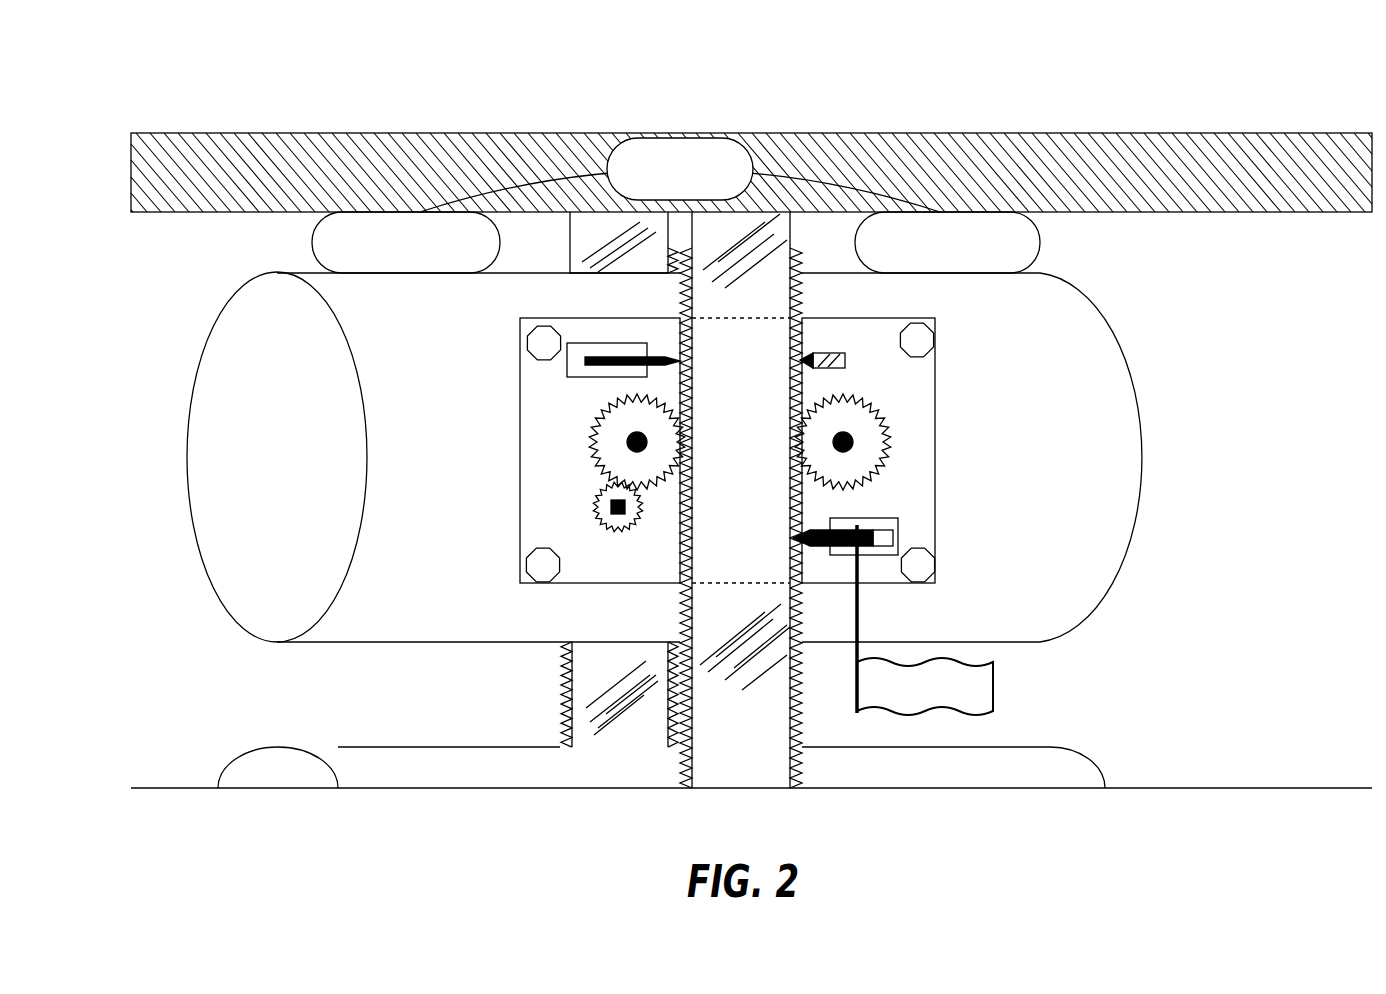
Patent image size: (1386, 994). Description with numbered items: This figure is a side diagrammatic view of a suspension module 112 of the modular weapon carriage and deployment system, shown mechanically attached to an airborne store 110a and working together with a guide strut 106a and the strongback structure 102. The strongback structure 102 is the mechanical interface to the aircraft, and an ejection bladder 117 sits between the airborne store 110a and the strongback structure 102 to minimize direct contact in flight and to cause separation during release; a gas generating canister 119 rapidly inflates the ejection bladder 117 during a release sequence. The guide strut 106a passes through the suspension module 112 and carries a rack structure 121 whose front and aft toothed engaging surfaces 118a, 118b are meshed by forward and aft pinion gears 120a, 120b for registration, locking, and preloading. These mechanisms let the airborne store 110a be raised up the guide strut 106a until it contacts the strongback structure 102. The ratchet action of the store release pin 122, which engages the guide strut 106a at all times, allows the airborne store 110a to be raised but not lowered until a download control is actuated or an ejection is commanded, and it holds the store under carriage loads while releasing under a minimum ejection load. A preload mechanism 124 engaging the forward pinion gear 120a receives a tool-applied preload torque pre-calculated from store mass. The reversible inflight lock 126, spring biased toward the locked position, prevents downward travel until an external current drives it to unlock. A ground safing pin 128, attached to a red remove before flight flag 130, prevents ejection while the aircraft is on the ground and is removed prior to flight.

The strongback structure 102 is at (1097, 133).
The gas generating canister 119 is at (680, 169).
The ejection bladder 117 is at (676, 242).
The airborne store 110a is at (1138, 562).
The guide strut 106a is at (790, 235).
The front toothed engaging surface 118a is at (720, 517).
The aft toothed engaging surface 118b is at (800, 707).
The rack structure 121 is at (680, 608).
The suspension module 112 is at (933, 452).
The forward pinion gear 120a is at (590, 442).
The aft pinion gear 120b is at (890, 423).
The preload mechanism 124 is at (593, 507).
The reversible inflight lock 126 is at (593, 353).
The store release pin 122 is at (845, 352).
The ground safing pin 128 is at (898, 523).
The remove before flight flag 130 is at (993, 692).